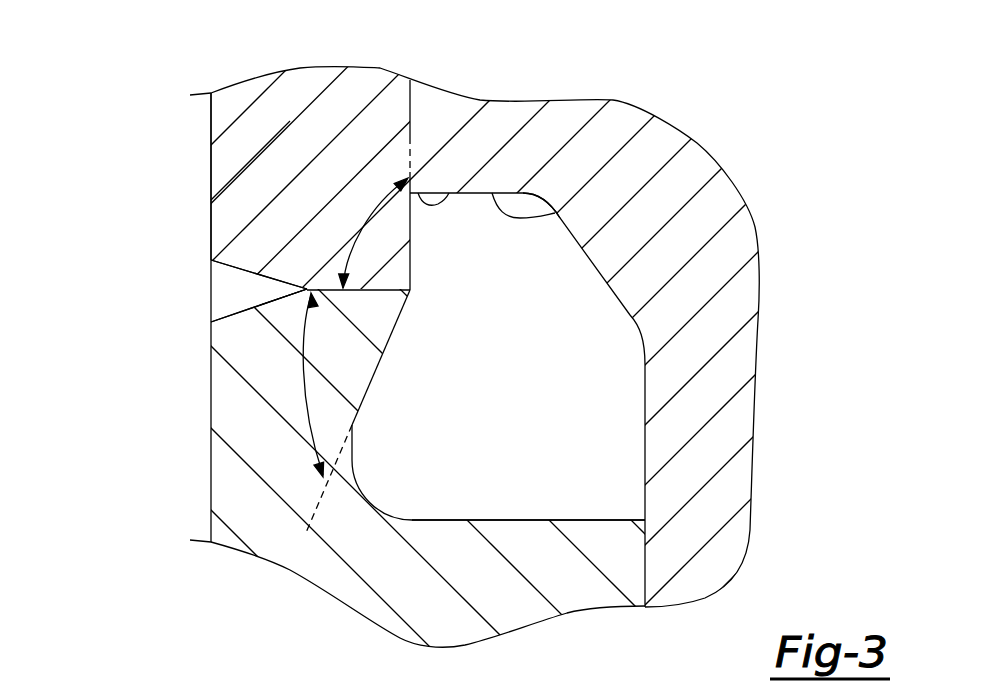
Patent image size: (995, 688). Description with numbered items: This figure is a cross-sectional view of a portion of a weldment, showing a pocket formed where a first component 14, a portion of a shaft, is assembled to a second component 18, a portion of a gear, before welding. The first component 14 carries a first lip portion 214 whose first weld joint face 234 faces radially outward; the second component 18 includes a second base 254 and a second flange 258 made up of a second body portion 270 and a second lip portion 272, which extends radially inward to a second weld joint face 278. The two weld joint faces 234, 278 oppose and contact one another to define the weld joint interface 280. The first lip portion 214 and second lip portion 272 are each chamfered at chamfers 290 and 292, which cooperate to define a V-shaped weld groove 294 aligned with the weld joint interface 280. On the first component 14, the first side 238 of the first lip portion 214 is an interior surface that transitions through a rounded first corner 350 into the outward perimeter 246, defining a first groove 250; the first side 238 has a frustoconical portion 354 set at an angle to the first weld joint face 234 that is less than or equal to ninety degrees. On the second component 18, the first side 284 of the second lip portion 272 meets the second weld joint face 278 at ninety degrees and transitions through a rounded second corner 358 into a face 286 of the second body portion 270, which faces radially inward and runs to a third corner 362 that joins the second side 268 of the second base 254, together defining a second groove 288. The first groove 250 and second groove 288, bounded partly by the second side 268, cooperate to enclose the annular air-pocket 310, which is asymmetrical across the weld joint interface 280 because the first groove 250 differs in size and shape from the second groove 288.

The first component 14 is at (286, 570).
The second component 18 is at (282, 70).
The first lip portion 214 is at (264, 347).
The first weld joint face 234 is at (307, 275).
The first side 238 is at (373, 380).
The outward perimeter 246 is at (522, 521).
The first groove 250 is at (517, 499).
The second base 254 is at (710, 520).
The second flange 258 is at (352, 95).
The second side 268 is at (645, 443).
The second body portion 270 is at (652, 147).
The second lip portion 272 is at (257, 216).
The second weld joint face 278 is at (307, 292).
The weld joint interface 280 is at (317, 287).
The first side 284 is at (413, 240).
The face 286 is at (555, 213).
The second groove 288 is at (505, 246).
The chamfer 290 is at (224, 318).
The chamfer 292 is at (247, 287).
The weld groove 294 is at (226, 278).
The air-pocket 310 is at (578, 352).
The first corner 350 is at (367, 487).
The portion 354 is at (409, 314).
The second corner 358 is at (447, 192).
The third corner 362 is at (540, 195).